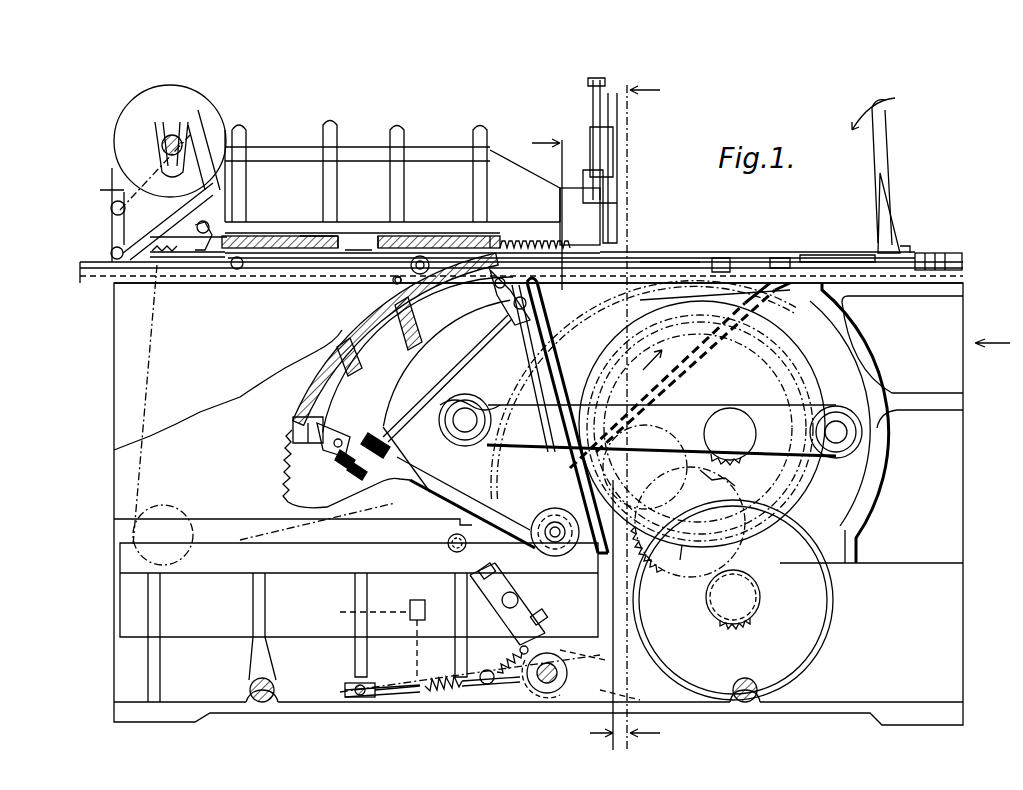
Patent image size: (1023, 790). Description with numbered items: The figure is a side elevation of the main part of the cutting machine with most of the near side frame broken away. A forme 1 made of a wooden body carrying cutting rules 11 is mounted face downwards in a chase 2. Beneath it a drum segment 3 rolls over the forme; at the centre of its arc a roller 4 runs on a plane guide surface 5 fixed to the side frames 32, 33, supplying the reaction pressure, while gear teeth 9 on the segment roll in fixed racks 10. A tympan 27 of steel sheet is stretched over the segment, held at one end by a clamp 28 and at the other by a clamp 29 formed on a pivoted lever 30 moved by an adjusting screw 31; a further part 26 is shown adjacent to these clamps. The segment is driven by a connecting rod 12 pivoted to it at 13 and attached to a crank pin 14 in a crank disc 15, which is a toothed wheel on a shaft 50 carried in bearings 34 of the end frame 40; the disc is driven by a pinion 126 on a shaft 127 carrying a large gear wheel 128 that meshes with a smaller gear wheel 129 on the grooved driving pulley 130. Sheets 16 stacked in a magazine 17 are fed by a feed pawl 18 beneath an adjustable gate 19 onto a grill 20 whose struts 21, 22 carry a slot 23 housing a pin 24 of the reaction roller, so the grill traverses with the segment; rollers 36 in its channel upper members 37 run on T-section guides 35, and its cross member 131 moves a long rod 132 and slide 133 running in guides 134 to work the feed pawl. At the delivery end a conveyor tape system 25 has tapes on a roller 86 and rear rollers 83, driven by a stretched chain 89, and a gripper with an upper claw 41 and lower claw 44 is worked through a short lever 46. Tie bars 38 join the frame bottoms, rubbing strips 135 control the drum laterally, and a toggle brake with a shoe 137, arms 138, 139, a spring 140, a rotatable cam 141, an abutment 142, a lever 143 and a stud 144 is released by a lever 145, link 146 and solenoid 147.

The forme 1 is at (437, 235).
The chase 2 is at (490, 234).
The drum segment 3 is at (552, 297).
The roller 4 is at (550, 512).
The plane guide surface 5 is at (350, 560).
The gear teeth 9 is at (292, 450).
The rack 10 is at (555, 238).
The cutting rules 11 is at (385, 246).
The connecting rod 12 is at (661, 417).
The pivot 13 is at (466, 410).
The crank pin 14 is at (836, 427).
The crank disc 15 is at (683, 562).
The sheet 16 is at (670, 258).
The magazine 17 is at (887, 167).
The feed pawl 18 is at (893, 243).
The adjustable gate 19 is at (615, 250).
The grill 20 is at (237, 270).
The strut 21 is at (644, 390).
The strut 22 is at (745, 360).
The slot 23 is at (560, 558).
The pin 24 is at (628, 560).
The conveyor tape system 25 is at (322, 245).
The bracket 26 is at (342, 451).
The tympan 27 is at (325, 375).
The clamp 28 is at (293, 425).
The clamp 29 is at (495, 290).
The pivoted lever 30 is at (495, 318).
The adjusting screw 31 is at (388, 432).
The side frame 32 is at (940, 586).
The side frame 33 is at (192, 398).
The bearing 34 is at (720, 408).
The guide 35 is at (110, 262).
The roller 36 is at (394, 284).
The upper member 37 is at (670, 310).
The tie bar 38 is at (250, 682).
The end frame 40 is at (893, 438).
The claw 41 is at (212, 238).
The lower claw 44 is at (185, 260).
The short lever 46 is at (185, 135).
The shaft 50 is at (724, 480).
The roller 83 is at (243, 270).
The roller 86 is at (420, 256).
The chain 89 is at (160, 258).
The pinion 126 is at (752, 620).
The shaft 127 is at (760, 585).
The large gear wheel 128 is at (833, 640).
The smaller gear wheel 129 is at (645, 467).
The grooved pulley 130 is at (778, 483).
The cross member 131 is at (685, 280).
The long rod 132 is at (838, 253).
The slide 133 is at (940, 253).
The guide 134 is at (630, 280).
The rubbing strip 135 is at (228, 525).
The brake shoe 137 is at (500, 533).
The toggle arm 138 is at (385, 686).
The toggle arm 139 is at (512, 700).
The spring 140 is at (470, 672).
The rotatable cam 141 is at (508, 604).
The abutment 142 is at (560, 682).
The lever 143 is at (452, 604).
The stud 144 is at (583, 649).
The lever 145 is at (480, 700).
The link 146 is at (415, 645).
The solenoid 147 is at (345, 612).